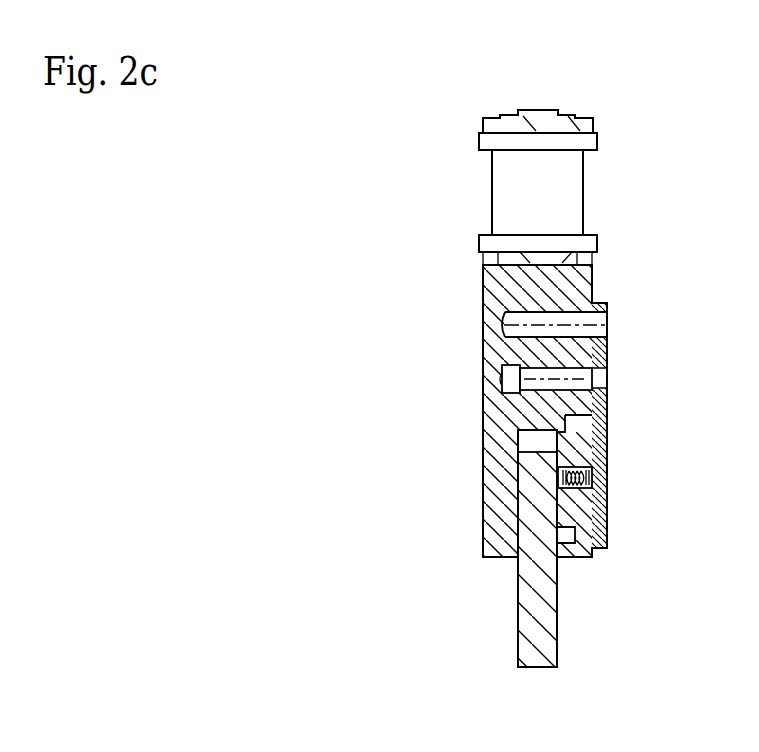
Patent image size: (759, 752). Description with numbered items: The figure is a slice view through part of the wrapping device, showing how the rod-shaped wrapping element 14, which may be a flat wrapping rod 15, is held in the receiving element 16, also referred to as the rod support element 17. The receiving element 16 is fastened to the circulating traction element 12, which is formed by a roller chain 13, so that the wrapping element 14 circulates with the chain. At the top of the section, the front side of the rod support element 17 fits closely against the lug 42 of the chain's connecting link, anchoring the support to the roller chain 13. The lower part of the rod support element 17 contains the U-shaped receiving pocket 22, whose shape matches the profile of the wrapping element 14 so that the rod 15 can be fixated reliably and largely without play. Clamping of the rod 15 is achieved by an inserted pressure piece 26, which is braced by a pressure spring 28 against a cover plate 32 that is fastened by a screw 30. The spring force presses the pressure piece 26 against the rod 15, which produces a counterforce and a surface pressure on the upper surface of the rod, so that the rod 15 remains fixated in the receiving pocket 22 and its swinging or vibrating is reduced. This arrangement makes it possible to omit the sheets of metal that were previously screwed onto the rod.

The traction element 12 is at (547, 130).
The roller chain 13 is at (537, 112).
The rod-shaped wrapping element 14 is at (535, 588).
The flat wrapping rod 15 is at (537, 612).
The receiving element 16 is at (352, 303).
The rod support element 17 is at (500, 288).
The U-shaped receiving pocket 22 is at (540, 441).
The pressure piece 26 is at (605, 438).
The pressure spring 28 is at (605, 486).
The screw 30 is at (600, 362).
The cover plate 32 is at (605, 535).
The lug 42 is at (604, 228).